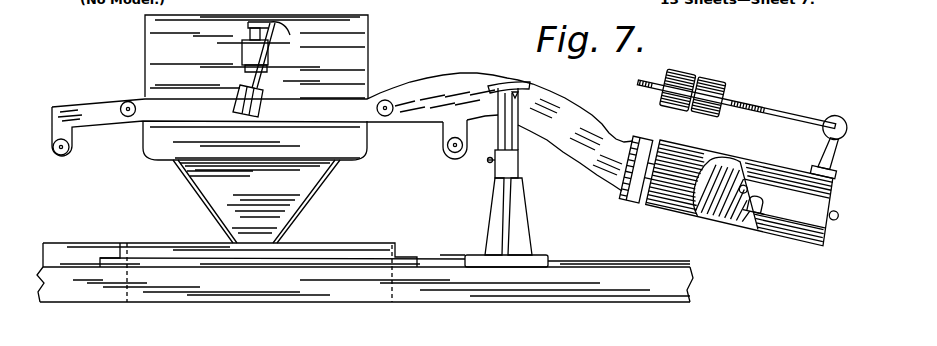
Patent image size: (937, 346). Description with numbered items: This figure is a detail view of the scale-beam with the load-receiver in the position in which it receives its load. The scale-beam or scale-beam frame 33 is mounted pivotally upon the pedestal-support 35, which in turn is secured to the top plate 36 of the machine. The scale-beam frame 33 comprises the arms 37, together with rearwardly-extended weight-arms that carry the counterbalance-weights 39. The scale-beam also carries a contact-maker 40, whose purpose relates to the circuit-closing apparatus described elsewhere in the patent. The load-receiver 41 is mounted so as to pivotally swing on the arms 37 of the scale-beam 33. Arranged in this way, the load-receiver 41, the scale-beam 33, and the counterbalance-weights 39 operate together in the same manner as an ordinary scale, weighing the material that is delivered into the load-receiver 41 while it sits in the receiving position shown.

The scale-beam frame 33 is at (319, 116).
The pedestal-support 35 is at (514, 140).
The top plate 36 is at (490, 287).
The arms 37 is at (590, 125).
The counterbalance-weights 39 is at (760, 168).
The contact-maker 40 is at (762, 200).
The load-receiver 41 is at (350, 65).